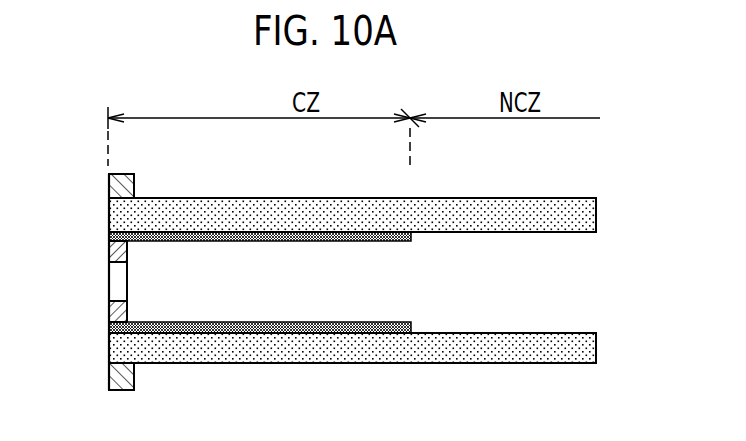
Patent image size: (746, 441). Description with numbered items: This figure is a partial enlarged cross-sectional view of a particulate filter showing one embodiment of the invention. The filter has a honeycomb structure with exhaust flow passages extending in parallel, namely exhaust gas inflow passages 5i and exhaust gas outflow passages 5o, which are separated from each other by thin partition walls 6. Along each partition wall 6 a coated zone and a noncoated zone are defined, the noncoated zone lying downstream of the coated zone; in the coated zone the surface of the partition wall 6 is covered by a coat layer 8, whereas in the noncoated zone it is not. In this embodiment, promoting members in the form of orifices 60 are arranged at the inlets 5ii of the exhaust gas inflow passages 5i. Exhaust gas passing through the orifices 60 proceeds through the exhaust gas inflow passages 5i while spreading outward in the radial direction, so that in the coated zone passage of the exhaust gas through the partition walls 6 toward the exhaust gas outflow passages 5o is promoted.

The partition wall 6 is at (562, 209).
The coat layer 8 is at (109, 237).
The orifice 60 is at (118, 266).
The inlet 5ii is at (108, 311).
The exhaust gas inflow passage 5i is at (537, 295).
The exhaust gas outflow passage 5o is at (537, 408).